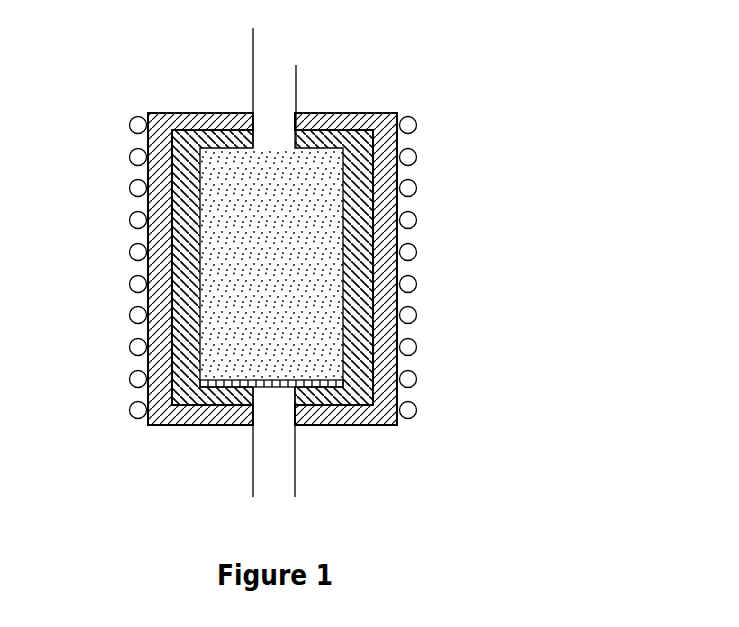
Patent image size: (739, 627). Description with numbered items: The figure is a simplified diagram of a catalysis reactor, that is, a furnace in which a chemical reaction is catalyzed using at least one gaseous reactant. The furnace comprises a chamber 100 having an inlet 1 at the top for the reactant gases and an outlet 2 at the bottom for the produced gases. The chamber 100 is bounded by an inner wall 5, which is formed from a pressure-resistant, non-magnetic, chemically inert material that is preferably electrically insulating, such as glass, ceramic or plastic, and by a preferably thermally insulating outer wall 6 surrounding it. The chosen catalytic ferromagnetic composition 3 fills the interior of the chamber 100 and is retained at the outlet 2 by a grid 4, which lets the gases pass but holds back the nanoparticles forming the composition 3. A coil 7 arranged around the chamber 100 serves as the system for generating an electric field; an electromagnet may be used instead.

The chamber 100 is at (146, 108).
The inlet 1 is at (277, 63).
The outlet 2 is at (272, 473).
The catalytic ferromagnetic composition 3 is at (267, 262).
The grid 4 is at (347, 380).
The inner wall 5 is at (400, 252).
The outer wall 6 is at (386, 113).
The coil 7 is at (400, 409).